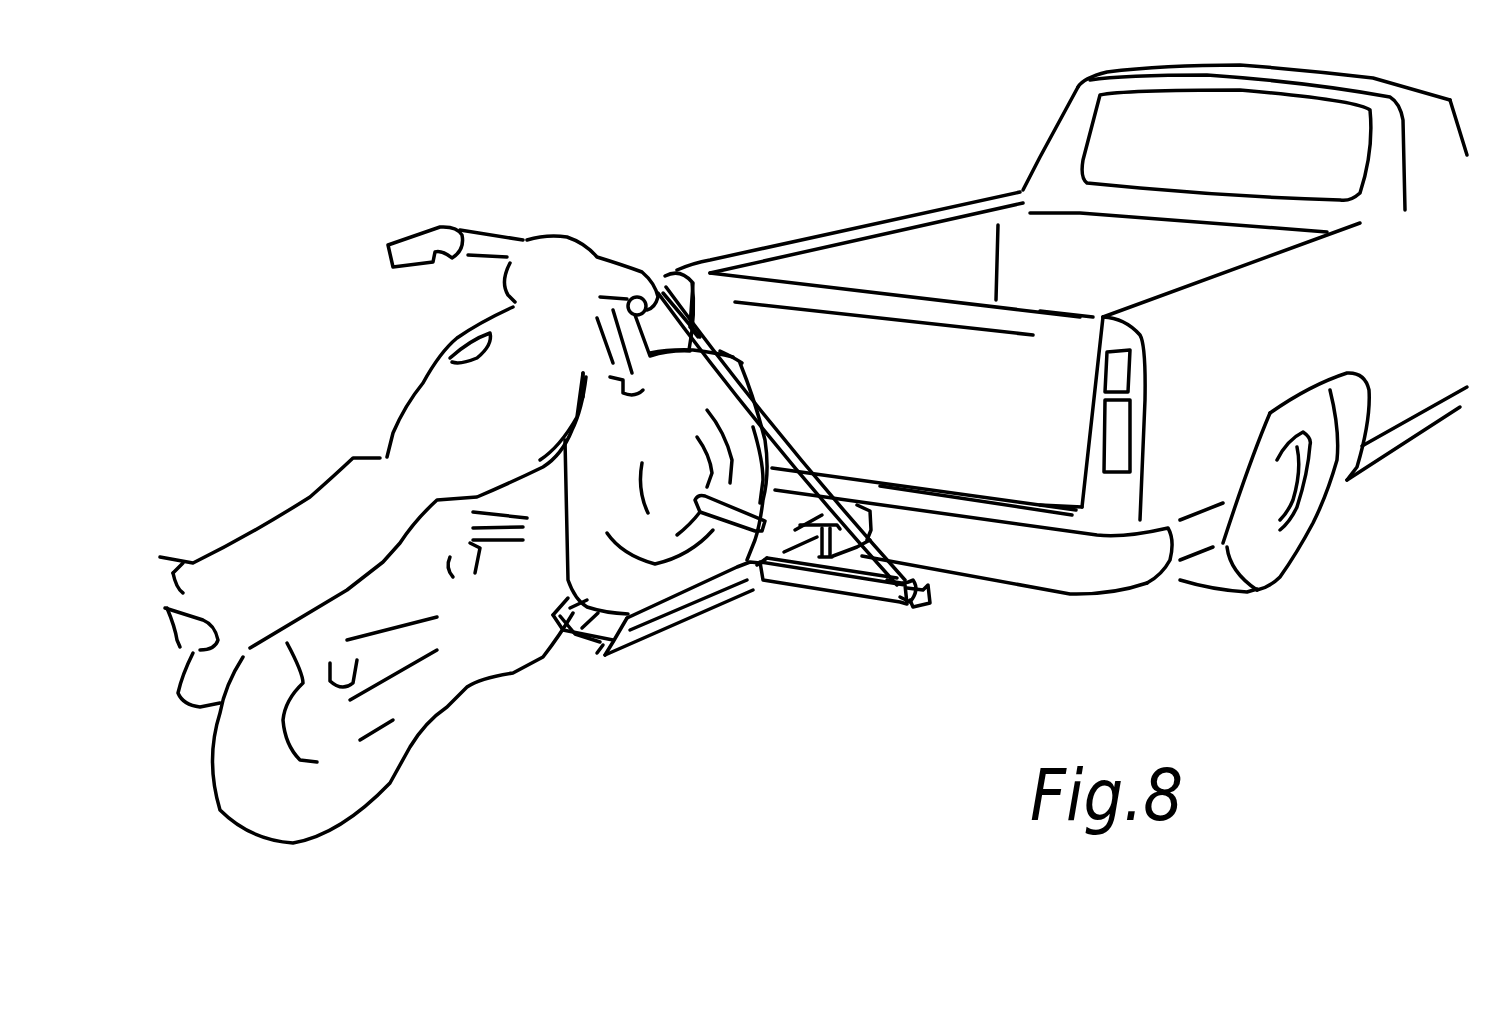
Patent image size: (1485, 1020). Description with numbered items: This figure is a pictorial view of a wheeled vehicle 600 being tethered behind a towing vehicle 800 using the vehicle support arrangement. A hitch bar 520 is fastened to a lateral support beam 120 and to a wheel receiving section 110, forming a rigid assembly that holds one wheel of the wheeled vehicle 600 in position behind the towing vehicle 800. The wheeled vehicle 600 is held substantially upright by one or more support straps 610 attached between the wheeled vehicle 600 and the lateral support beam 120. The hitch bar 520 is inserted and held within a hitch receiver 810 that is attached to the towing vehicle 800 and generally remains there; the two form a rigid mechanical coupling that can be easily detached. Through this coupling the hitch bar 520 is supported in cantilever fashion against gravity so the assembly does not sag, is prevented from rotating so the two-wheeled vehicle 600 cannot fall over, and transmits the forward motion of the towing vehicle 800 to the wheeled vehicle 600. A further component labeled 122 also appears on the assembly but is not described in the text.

The wheel receiving section 110 is at (553, 617).
The lateral support beam 120 is at (873, 598).
The rail end bracket 122 is at (907, 577).
The hitch bar 520 is at (673, 630).
The wheeled vehicle 600 is at (417, 383).
The support strap 610 is at (793, 445).
The towing vehicle 800 is at (955, 397).
The hitch receiver 810 is at (860, 505).